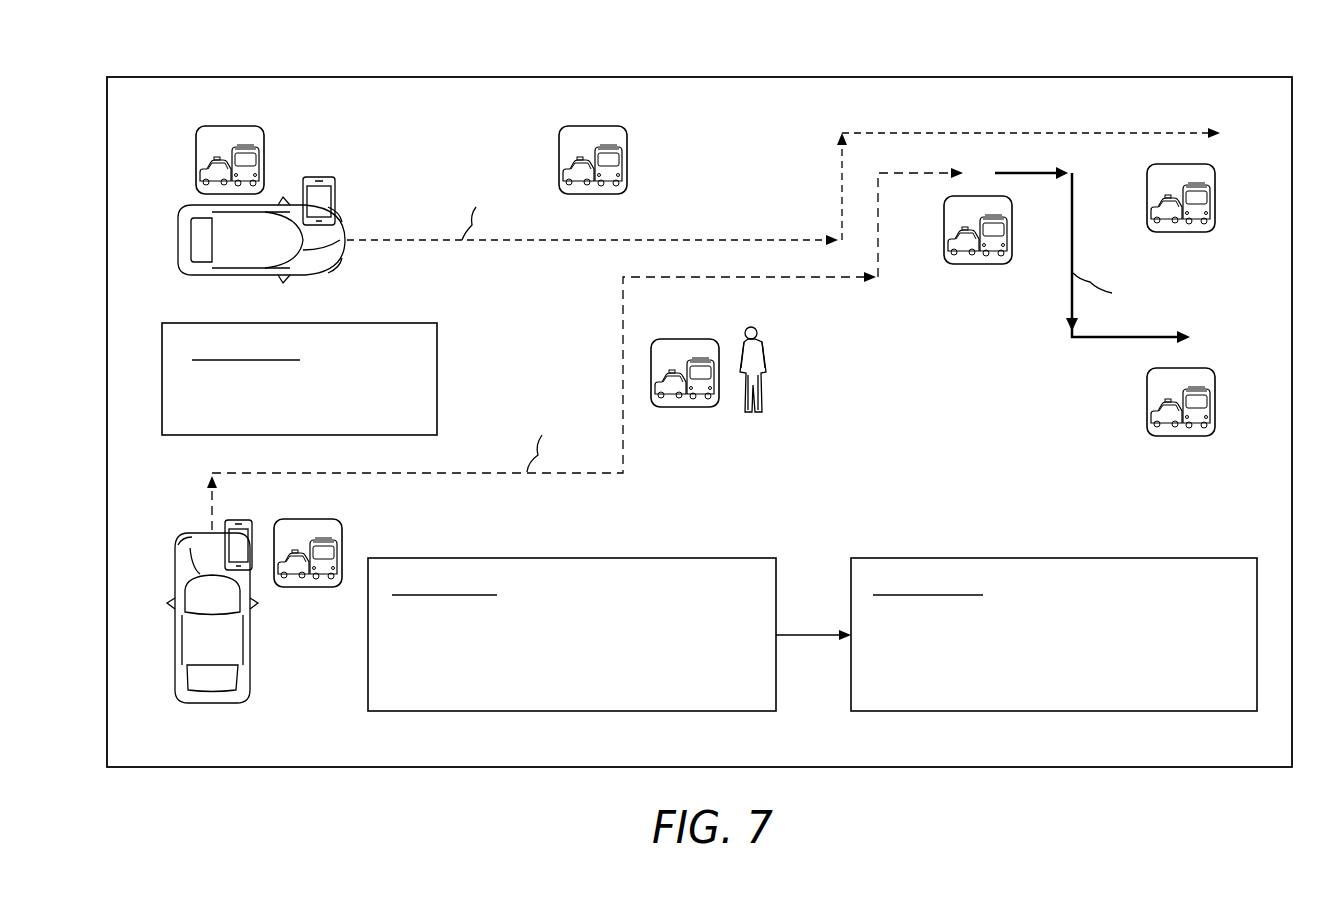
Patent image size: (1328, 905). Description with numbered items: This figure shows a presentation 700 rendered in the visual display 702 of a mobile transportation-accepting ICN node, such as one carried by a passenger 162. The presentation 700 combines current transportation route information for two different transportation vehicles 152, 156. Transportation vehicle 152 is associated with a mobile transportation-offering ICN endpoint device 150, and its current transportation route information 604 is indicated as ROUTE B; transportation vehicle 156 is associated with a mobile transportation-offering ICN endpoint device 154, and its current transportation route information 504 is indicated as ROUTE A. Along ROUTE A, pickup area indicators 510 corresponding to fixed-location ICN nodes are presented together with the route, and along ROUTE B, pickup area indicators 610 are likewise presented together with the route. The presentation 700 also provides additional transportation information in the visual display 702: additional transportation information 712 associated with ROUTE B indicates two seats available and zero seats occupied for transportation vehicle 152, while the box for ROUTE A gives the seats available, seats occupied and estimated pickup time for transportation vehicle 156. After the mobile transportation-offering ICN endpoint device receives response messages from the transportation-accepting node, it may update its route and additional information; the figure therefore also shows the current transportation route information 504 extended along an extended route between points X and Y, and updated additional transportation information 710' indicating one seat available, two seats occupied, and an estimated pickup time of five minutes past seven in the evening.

The presentation 700 is at (200, 50).
The visual display 702 is at (1220, 76).
The pickup area indicators 610 is at (166, 160).
The mobile transportation-offering ICN endpoint device 150 is at (318, 178).
The transportation vehicle 152 is at (215, 277).
The additional transportation information 712 is at (362, 323).
The current transportation route information 604 is at (750, 207).
The passenger 162 is at (765, 350).
The current transportation route information 504 is at (650, 448).
The mobile transportation-offering ICN endpoint device 154 is at (240, 522).
The transportation vehicle 156 is at (211, 705).
The pickup area indicators 510 is at (310, 613).
The updated additional transportation information 710' is at (1058, 619).